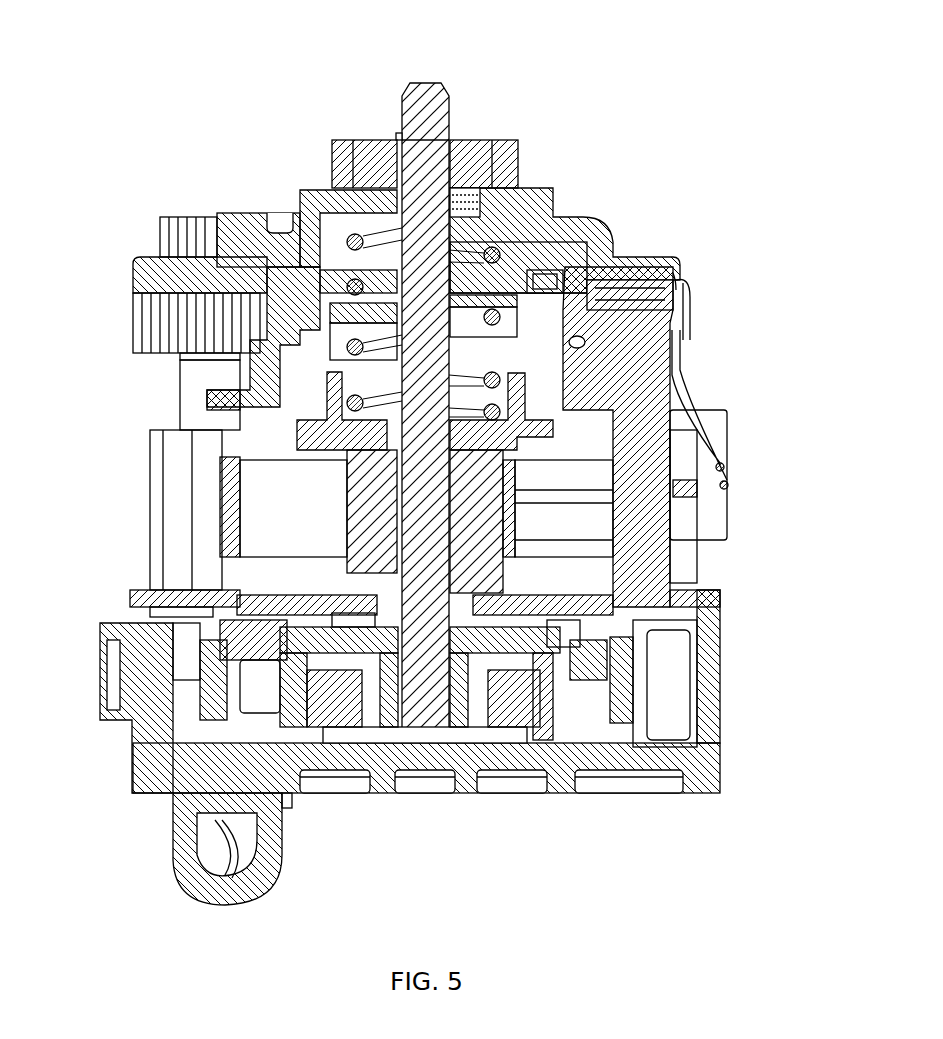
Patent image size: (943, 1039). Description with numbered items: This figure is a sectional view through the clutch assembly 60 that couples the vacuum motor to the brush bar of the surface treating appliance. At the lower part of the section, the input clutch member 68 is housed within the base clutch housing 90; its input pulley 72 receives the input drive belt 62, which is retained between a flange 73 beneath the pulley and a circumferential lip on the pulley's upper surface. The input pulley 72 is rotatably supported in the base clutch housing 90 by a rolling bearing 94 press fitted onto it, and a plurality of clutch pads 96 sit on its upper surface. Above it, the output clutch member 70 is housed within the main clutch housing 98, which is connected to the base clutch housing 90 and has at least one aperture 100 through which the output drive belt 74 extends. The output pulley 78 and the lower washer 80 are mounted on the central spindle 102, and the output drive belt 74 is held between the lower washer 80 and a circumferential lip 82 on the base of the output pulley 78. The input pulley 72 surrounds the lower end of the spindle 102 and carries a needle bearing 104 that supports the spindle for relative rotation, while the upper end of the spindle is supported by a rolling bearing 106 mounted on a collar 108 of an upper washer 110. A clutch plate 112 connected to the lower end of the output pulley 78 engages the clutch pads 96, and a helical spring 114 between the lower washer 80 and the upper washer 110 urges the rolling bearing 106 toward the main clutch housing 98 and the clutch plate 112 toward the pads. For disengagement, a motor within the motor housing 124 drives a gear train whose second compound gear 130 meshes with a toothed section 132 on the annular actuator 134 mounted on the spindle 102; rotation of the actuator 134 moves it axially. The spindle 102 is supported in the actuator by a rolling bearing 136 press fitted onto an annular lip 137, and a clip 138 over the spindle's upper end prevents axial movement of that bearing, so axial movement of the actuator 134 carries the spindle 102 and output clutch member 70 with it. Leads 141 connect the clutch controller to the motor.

The clutch assembly 60 is at (238, 46).
The input drive belt 62 is at (287, 855).
The input clutch member 68 is at (660, 670).
The output clutch member 70 is at (595, 598).
The input pulley 72 is at (633, 735).
The flange 73 is at (300, 796).
The output drive belt 74 is at (245, 595).
The output pulley 78 is at (567, 562).
The lower washer 80 is at (536, 447).
The circumferential lip 82 is at (327, 590).
The base clutch housing 90 is at (180, 838).
The rolling bearing 94 is at (548, 728).
The clutch pads 96 is at (583, 645).
The main clutch housing 98 is at (684, 413).
The aperture 100 is at (150, 530).
The spindle 102 is at (453, 92).
The needle bearing 104 is at (458, 728).
The rolling bearing 106 is at (395, 252).
The collar 108 is at (485, 273).
The upper washer 110 is at (352, 347).
The clutch plate 112 is at (258, 582).
The helical spring 114 is at (352, 408).
The motor housing 124 is at (694, 285).
The second compound gear 130 is at (128, 340).
The toothed section 132 is at (243, 228).
The annular actuator 134 is at (560, 186).
The rolling bearing 136 is at (397, 168).
The annular lip 137 is at (485, 178).
The clip 138 is at (395, 128).
The leads 141 is at (728, 483).